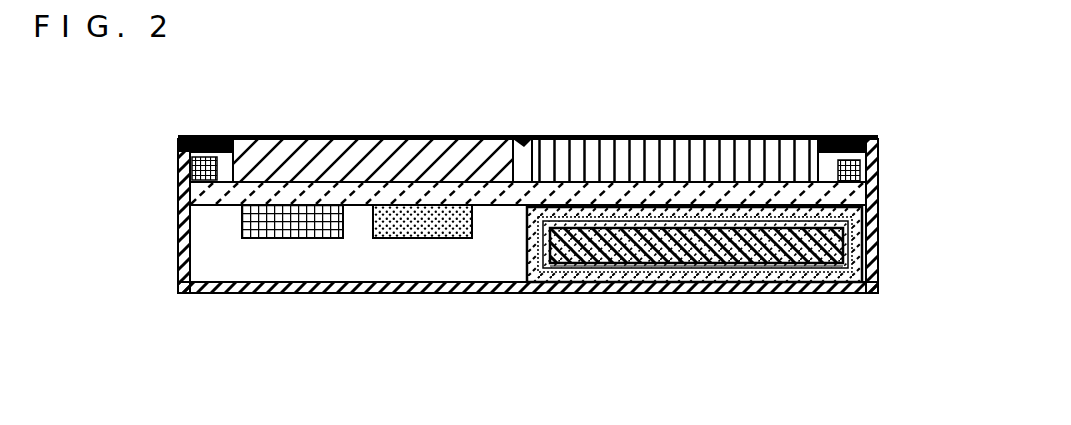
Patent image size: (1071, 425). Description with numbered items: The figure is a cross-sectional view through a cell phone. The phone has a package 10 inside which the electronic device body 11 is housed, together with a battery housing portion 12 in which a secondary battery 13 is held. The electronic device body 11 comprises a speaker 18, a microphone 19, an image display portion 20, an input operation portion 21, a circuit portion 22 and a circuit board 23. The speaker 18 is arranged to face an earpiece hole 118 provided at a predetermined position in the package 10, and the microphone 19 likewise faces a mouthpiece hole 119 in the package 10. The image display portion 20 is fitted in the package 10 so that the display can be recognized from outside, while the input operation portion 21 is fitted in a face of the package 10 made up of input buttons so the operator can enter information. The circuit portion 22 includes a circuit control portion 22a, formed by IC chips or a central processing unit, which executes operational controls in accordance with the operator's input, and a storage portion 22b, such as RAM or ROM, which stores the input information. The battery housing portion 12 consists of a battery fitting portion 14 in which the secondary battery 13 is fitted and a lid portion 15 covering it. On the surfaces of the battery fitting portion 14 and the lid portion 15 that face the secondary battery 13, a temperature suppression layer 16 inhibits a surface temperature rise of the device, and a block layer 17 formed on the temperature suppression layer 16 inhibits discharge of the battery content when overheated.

The package 10 is at (238, 290).
The electronic device body 11 is at (498, 117).
The battery housing portion 12 is at (873, 231).
The secondary battery 13 is at (673, 247).
The battery fitting portion 14 is at (878, 264).
The lid portion 15 is at (773, 283).
The temperature suppression layer 16 is at (545, 283).
The block layer 17 is at (733, 270).
The speaker 18 is at (197, 160).
The microphone 19 is at (860, 168).
The image display portion 20 is at (378, 135).
The input operation portion 21 is at (640, 150).
The circuit portion 22 is at (357, 302).
The circuit control portion 22a is at (315, 222).
The storage portion 22b is at (400, 238).
The circuit board 23 is at (722, 195).
The earpiece hole 118 is at (219, 135).
The mouthpiece hole 119 is at (845, 140).